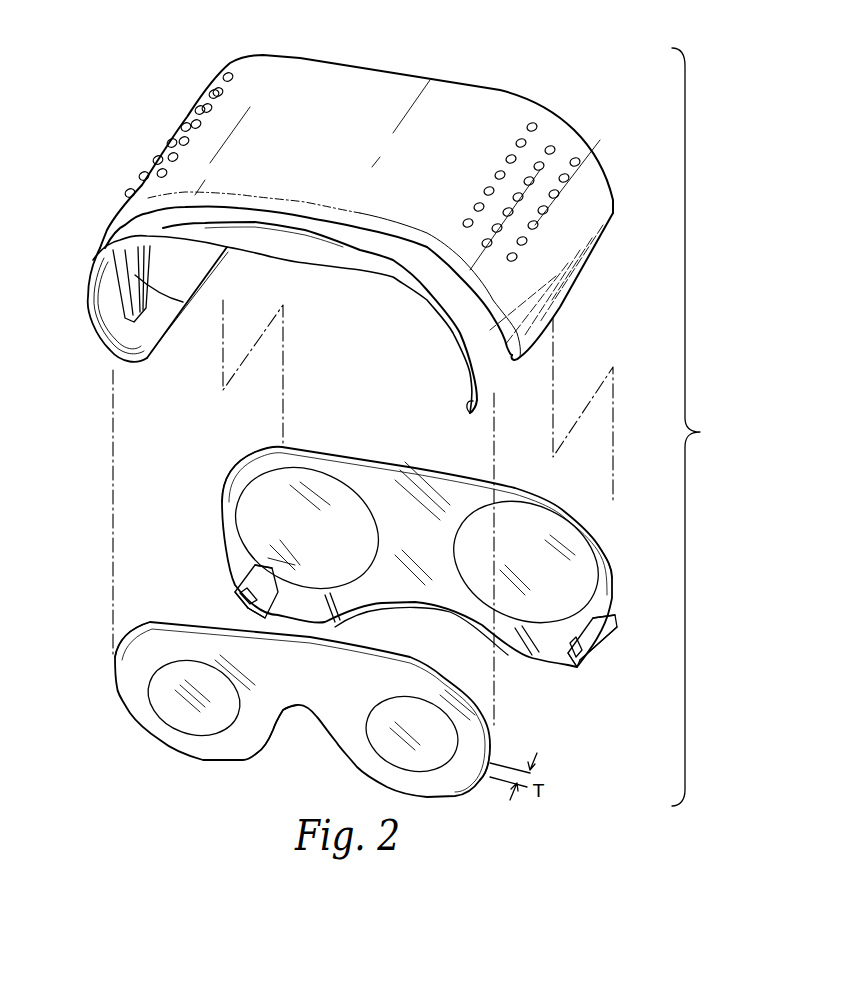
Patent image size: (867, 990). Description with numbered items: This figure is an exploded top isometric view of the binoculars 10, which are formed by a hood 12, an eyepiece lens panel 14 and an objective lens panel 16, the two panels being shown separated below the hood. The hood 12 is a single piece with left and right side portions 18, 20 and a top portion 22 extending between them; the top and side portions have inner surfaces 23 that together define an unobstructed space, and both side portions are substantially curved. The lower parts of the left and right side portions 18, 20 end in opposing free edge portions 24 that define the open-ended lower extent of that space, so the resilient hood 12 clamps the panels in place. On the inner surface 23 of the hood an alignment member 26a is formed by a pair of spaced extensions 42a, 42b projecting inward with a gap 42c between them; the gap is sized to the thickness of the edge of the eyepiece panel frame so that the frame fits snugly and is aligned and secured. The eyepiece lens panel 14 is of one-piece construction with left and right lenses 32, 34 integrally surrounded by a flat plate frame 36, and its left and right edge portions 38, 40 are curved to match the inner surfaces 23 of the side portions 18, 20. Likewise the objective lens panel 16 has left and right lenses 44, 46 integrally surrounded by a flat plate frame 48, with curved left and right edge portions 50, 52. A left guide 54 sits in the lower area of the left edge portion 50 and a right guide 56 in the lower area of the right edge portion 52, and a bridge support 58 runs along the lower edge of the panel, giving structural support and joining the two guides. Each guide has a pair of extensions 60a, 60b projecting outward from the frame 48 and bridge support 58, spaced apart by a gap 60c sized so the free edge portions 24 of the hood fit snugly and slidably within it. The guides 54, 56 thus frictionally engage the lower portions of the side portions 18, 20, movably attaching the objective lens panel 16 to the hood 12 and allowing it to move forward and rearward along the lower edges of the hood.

The binoculars 10 is at (731, 351).
The hood 12 is at (318, 60).
The eyepiece lens panel 14 is at (220, 766).
The objective lens panel 16 is at (338, 450).
The left side portion 18 is at (125, 210).
The right side portion 20 is at (578, 243).
The top portion 22 is at (445, 110).
The inner surfaces 23 is at (182, 277).
The free edge portions 24 is at (163, 343).
The alignment member 26a is at (113, 283).
The left lens 32 is at (188, 703).
The right lens 34 is at (432, 760).
The flat plate frame 36 is at (345, 710).
The left edge portion 38 is at (113, 663).
The right edge portion 40 is at (492, 727).
The extension 42a is at (127, 318).
The extension 42b is at (140, 290).
The gap 42c is at (132, 320).
The left lens 44 is at (256, 492).
The right lens 46 is at (573, 550).
The flat plate frame 48 is at (425, 492).
The left edge portion 50 is at (225, 517).
The right edge portion 52 is at (614, 590).
The left guide 54 is at (245, 606).
The right guide 56 is at (610, 657).
The bridge support 58 is at (370, 615).
The extension 60a is at (255, 580).
The extension 60b is at (270, 587).
The gap 60c is at (240, 600).